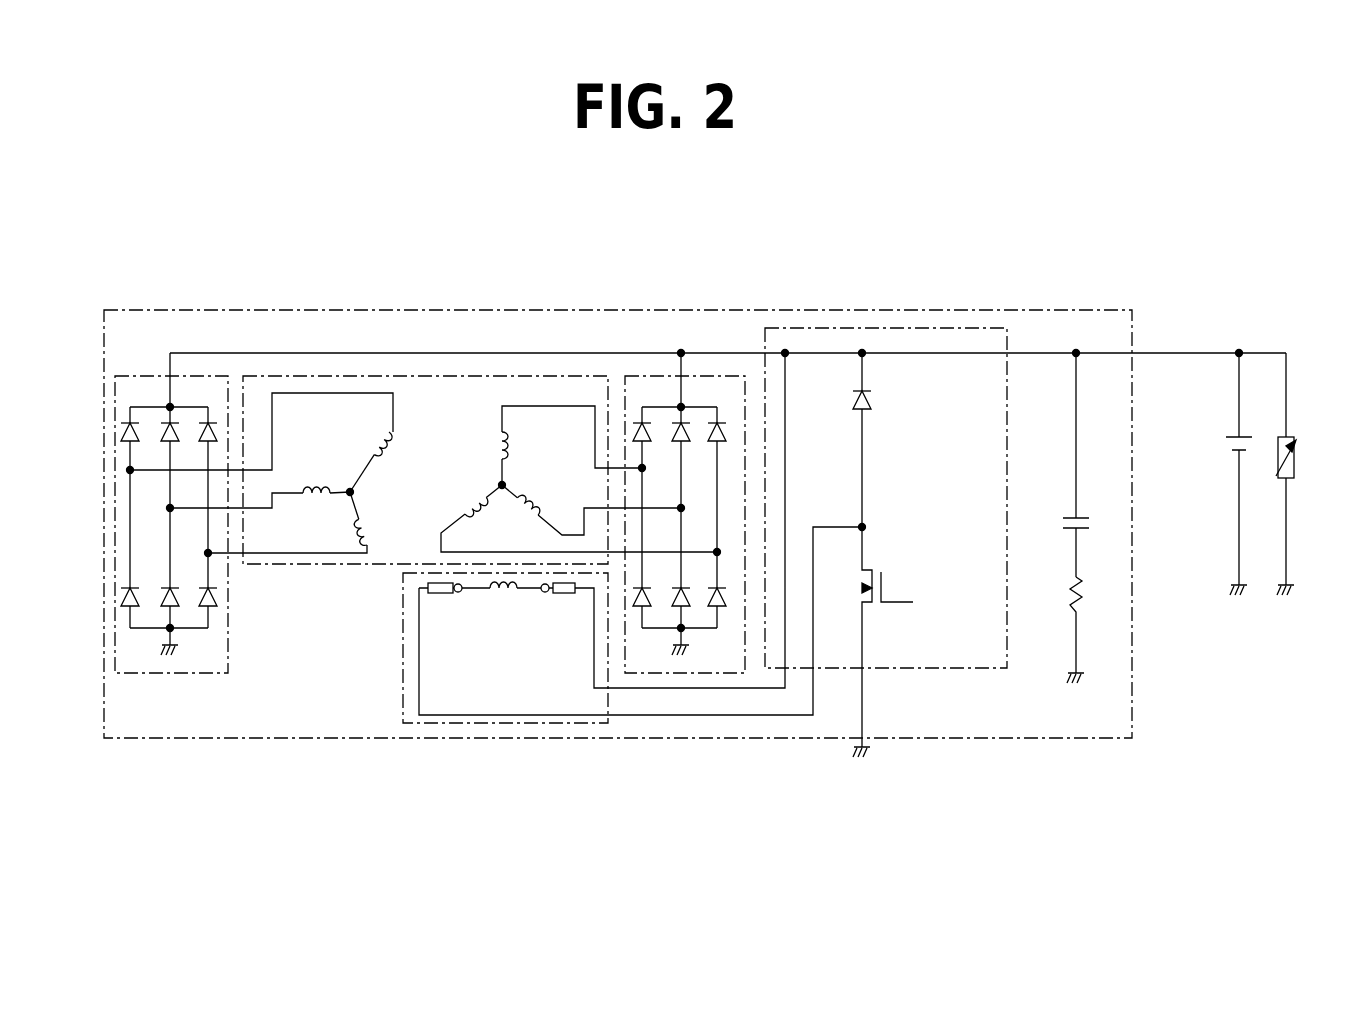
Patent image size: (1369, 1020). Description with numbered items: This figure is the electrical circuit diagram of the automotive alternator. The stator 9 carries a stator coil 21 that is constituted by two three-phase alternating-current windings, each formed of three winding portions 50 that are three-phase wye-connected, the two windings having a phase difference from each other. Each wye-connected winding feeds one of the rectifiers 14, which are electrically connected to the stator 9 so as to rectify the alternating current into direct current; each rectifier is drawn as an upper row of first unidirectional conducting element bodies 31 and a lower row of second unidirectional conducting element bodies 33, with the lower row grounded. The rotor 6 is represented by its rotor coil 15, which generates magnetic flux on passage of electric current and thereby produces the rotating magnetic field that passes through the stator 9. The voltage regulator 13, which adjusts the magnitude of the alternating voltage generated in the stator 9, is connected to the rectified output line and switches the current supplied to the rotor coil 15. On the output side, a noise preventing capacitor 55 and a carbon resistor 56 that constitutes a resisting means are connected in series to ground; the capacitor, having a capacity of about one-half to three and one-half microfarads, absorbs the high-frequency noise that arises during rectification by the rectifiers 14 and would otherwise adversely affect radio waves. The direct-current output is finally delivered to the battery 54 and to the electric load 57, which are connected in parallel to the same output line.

The stator 9 is at (432, 375).
The rectifiers 14 is at (185, 674).
The first unidirectional conducting element bodies 31 is at (125, 438).
The second unidirectional conducting element bodies 33 is at (122, 600).
The winding portions 50 is at (307, 487).
The stator coil 21 is at (350, 440).
The rotor 6 is at (388, 663).
The rotor coil 15 is at (508, 590).
The voltage regulator 13 is at (925, 328).
The battery 54 is at (1228, 445).
The noise preventing capacitor 55 is at (1093, 523).
The carbon resistor 56 is at (1083, 590).
The electric load 57 is at (1295, 470).